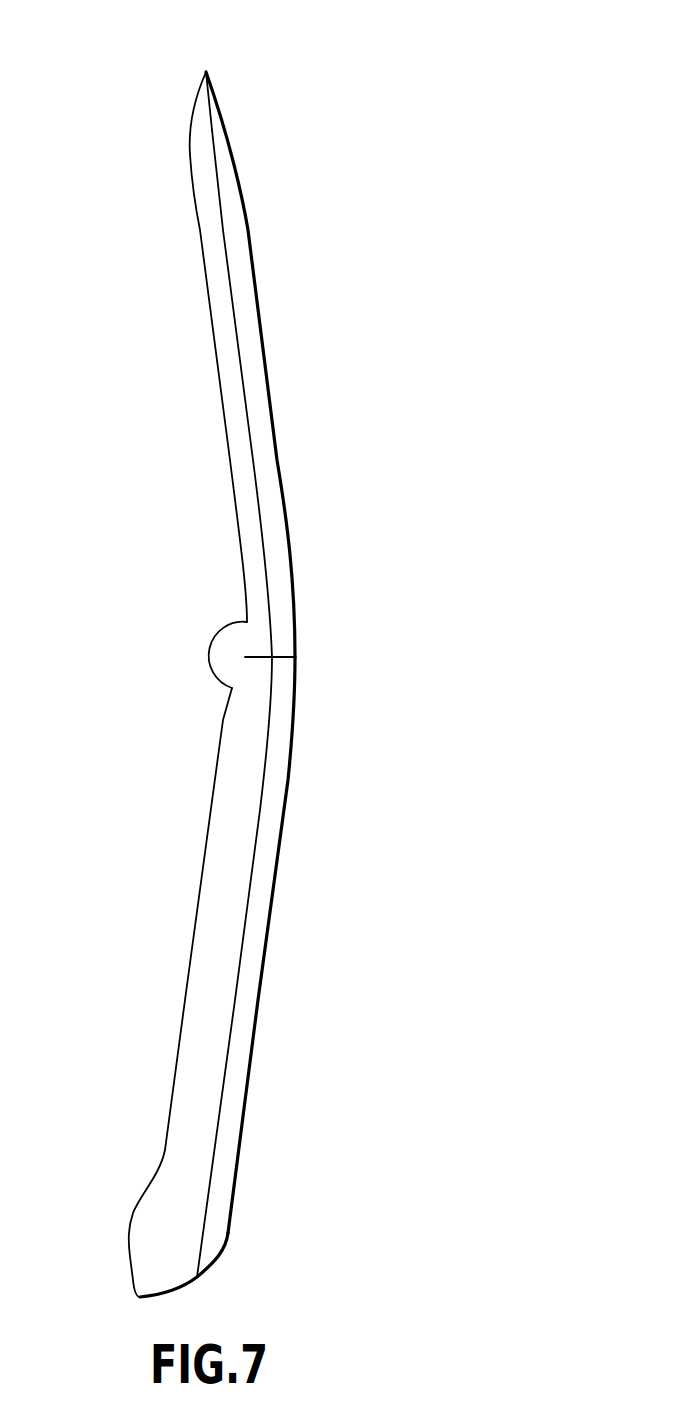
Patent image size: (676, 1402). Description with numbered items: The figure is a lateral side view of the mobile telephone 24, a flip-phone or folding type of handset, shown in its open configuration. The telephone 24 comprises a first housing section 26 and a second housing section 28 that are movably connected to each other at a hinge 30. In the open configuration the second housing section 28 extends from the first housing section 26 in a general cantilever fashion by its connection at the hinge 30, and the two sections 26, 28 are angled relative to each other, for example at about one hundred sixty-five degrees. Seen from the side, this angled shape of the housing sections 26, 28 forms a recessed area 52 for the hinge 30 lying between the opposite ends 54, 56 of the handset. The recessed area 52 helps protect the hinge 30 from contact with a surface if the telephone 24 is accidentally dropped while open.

The mobile telephone 24 is at (413, 133).
The first housing section 26 is at (265, 960).
The second housing section 28 is at (267, 360).
The hinge 30 is at (212, 648).
The recessed area 52 is at (165, 543).
The opposite end 54 is at (128, 1258).
The opposite end 56 is at (206, 72).